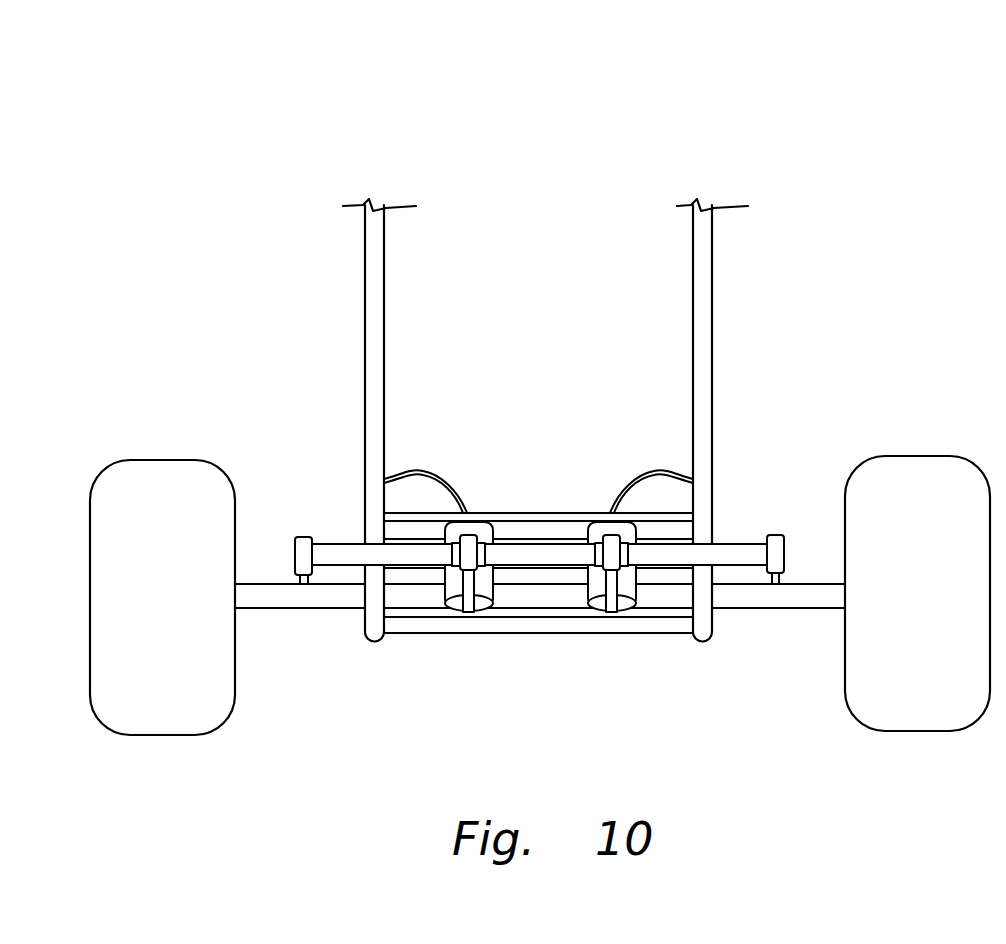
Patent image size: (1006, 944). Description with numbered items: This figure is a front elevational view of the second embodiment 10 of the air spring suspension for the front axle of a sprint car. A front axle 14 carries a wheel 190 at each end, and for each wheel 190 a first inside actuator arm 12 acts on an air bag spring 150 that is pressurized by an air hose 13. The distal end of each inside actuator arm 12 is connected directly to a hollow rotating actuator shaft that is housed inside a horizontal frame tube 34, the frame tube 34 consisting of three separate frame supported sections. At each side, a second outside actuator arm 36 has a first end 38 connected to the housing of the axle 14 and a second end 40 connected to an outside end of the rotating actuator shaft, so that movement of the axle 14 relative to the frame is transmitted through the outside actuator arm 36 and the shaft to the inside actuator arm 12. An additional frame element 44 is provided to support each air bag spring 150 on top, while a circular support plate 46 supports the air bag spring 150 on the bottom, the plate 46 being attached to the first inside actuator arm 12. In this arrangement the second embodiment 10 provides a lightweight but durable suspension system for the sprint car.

The second embodiment 10 is at (575, 132).
The first inside actuator arm 12 is at (462, 572).
The air hose 13 is at (423, 470).
The front axle 14 is at (803, 596).
The horizontal frame tube 34 is at (349, 550).
The second outside actuator arm 36 is at (296, 562).
The first end 38 is at (305, 537).
The second end 40 is at (297, 580).
The additional frame element 44 is at (580, 513).
The circular support plate 46 is at (488, 610).
The air bag spring 150 is at (597, 582).
The wheel 190 is at (183, 537).